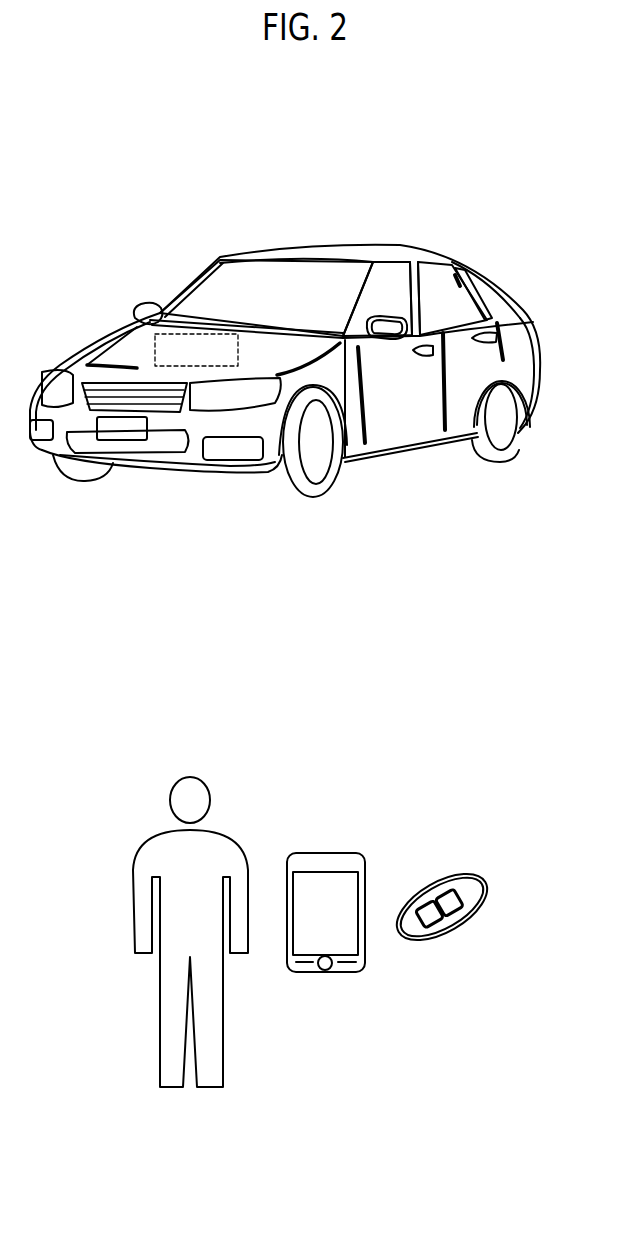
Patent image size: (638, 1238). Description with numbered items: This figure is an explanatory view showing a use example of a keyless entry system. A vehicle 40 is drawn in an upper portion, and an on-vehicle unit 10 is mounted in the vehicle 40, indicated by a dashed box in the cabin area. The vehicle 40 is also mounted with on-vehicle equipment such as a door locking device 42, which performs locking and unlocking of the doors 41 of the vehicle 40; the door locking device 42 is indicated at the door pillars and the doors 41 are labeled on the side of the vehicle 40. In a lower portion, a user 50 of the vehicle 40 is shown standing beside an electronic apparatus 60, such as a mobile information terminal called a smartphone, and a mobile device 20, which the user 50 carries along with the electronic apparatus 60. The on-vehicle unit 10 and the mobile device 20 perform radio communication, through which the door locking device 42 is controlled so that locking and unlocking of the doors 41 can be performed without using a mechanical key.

The on-vehicle unit 10 is at (193, 347).
The mobile device 20 is at (467, 888).
The vehicle 40 is at (337, 243).
The doors 41 is at (397, 410).
The door locking device 42 is at (450, 320).
The user 50 is at (220, 845).
The electronic apparatus 60 is at (322, 865).